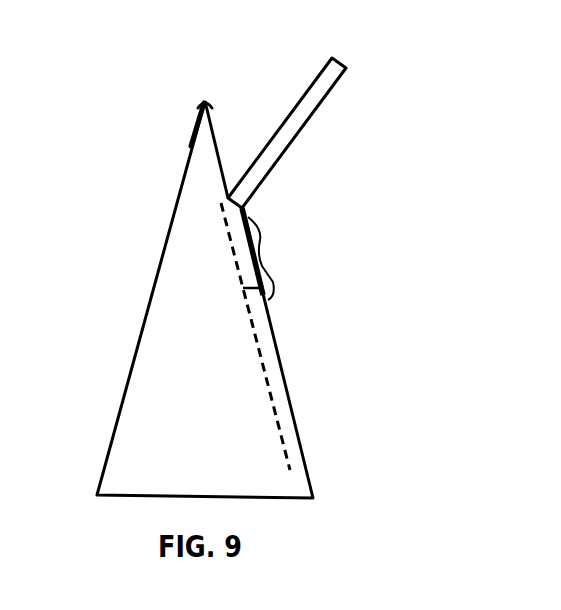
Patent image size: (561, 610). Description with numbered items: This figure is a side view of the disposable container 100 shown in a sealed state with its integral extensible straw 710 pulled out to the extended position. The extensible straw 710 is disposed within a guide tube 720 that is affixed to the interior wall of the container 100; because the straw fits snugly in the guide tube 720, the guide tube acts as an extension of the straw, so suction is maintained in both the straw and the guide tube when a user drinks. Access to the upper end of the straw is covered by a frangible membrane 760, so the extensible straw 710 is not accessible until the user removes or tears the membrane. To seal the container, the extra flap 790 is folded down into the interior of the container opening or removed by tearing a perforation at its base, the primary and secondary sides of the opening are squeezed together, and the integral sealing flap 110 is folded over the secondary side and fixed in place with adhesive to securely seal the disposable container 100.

The disposable container 100 is at (133, 357).
The integral sealing flap 110 is at (190, 130).
The extra flap 790 is at (207, 128).
The extensible straw 710 is at (328, 96).
The frangible membrane 760 is at (273, 273).
The guide tube 720 is at (272, 403).